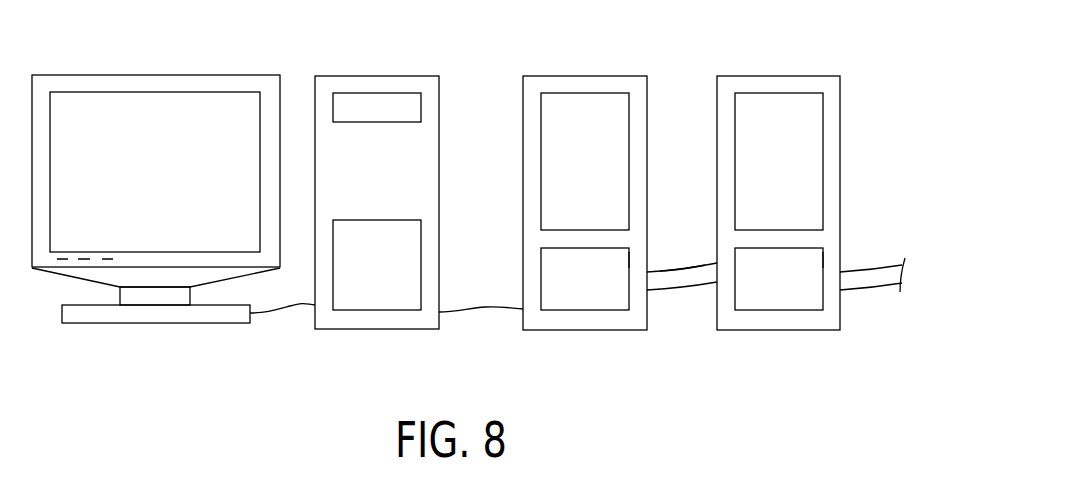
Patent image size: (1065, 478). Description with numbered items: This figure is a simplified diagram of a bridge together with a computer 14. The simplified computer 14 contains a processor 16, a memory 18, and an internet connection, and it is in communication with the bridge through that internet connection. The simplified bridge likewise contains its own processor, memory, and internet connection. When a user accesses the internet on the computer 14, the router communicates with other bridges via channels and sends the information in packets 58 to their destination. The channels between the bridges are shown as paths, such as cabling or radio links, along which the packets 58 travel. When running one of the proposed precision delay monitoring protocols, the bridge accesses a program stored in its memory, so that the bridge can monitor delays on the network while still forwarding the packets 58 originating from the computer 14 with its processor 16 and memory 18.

The computer 14 is at (377, 74).
The processor 16 is at (347, 100).
The memory 18 is at (385, 237).
The packets 58 is at (689, 274).